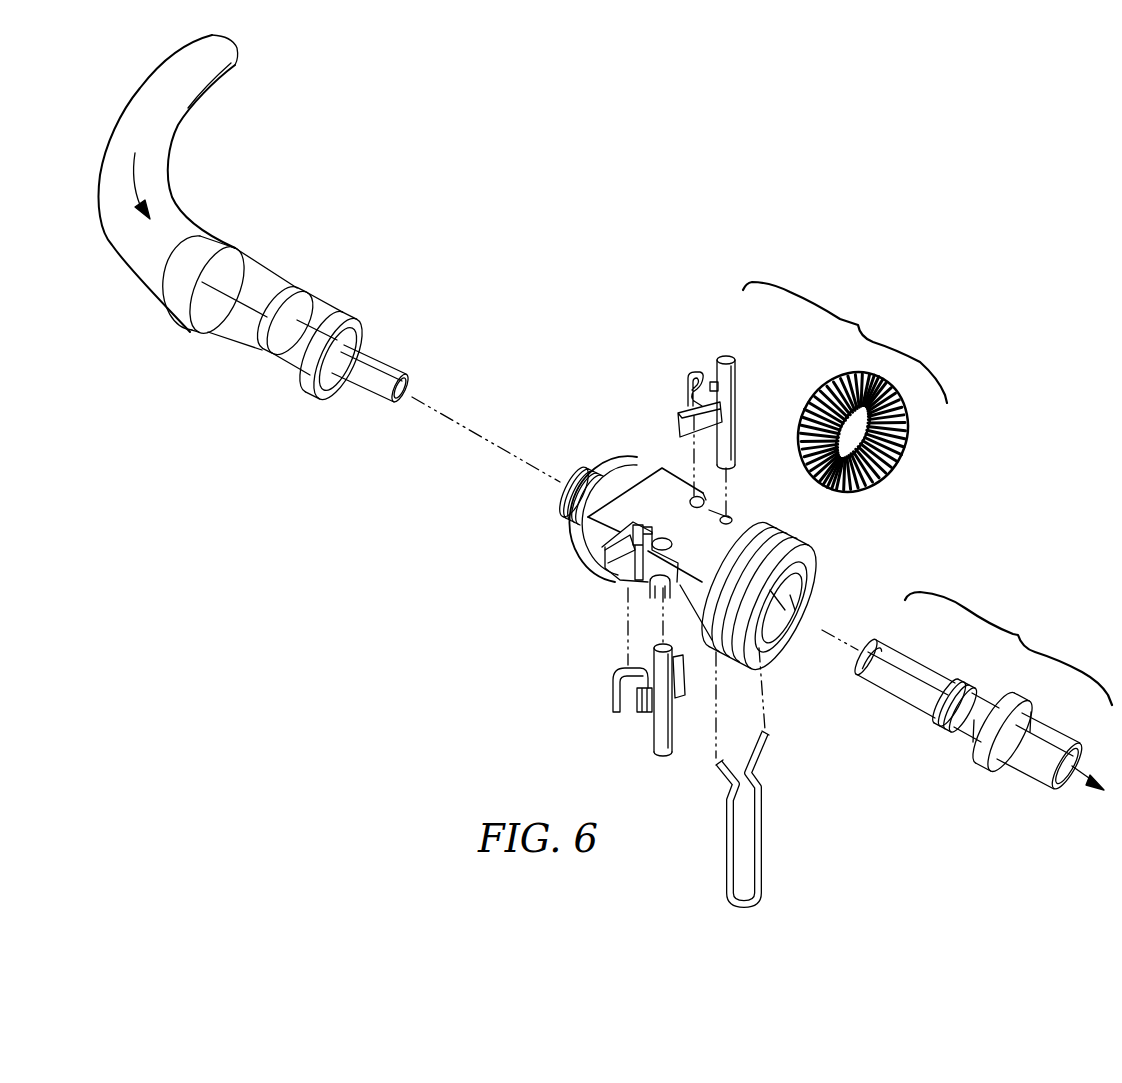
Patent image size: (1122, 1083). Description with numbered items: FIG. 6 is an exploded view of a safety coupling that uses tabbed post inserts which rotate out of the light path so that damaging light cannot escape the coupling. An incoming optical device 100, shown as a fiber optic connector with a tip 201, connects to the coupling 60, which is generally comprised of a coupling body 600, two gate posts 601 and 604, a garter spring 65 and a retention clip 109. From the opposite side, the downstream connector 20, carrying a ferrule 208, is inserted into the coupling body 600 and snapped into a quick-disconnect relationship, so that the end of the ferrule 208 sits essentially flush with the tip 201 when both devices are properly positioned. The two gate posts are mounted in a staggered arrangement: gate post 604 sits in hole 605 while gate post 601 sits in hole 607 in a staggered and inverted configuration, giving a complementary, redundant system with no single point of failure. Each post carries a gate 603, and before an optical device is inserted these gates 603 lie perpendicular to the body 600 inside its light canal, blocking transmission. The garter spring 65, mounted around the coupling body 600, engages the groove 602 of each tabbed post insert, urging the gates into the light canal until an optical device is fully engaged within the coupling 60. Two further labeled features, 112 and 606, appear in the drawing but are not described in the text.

The optical device 100 is at (363, 323).
The tip 201 is at (390, 362).
The coupling 60 is at (845, 342).
The coupling body 600 is at (738, 517).
The gate post 601 is at (733, 361).
The groove 602 is at (690, 374).
The gate 603 is at (677, 416).
The gate post 604 is at (662, 745).
The hole 605 is at (641, 541).
The peg 606 is at (650, 588).
The hole 607 is at (734, 516).
The garter spring 65 is at (890, 455).
The threaded nut 112 is at (812, 548).
The connector 20 is at (1008, 648).
The ferrule 208 is at (900, 667).
The retention clip 109 is at (763, 823).